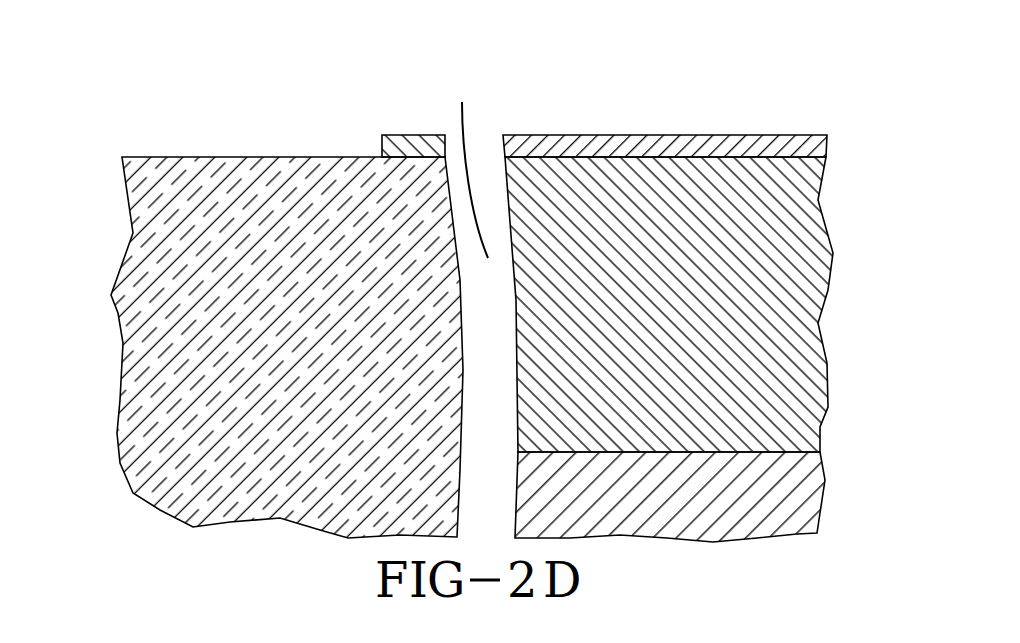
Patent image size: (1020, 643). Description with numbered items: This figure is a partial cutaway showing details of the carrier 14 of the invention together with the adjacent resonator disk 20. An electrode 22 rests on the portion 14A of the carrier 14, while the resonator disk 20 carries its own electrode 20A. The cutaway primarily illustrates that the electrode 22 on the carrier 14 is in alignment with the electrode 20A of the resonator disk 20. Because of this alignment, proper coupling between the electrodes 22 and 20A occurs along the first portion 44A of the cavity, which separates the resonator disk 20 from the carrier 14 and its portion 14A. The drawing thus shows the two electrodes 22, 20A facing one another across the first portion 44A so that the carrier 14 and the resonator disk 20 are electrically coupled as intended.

The carrier 14 is at (748, 513).
The portion of the carrier 14A is at (772, 240).
The resonator disk 20 is at (180, 268).
The electrode of the resonator disk 20A is at (415, 133).
The electrode 22 is at (550, 135).
The first portion of the cavity 44A is at (469, 165).